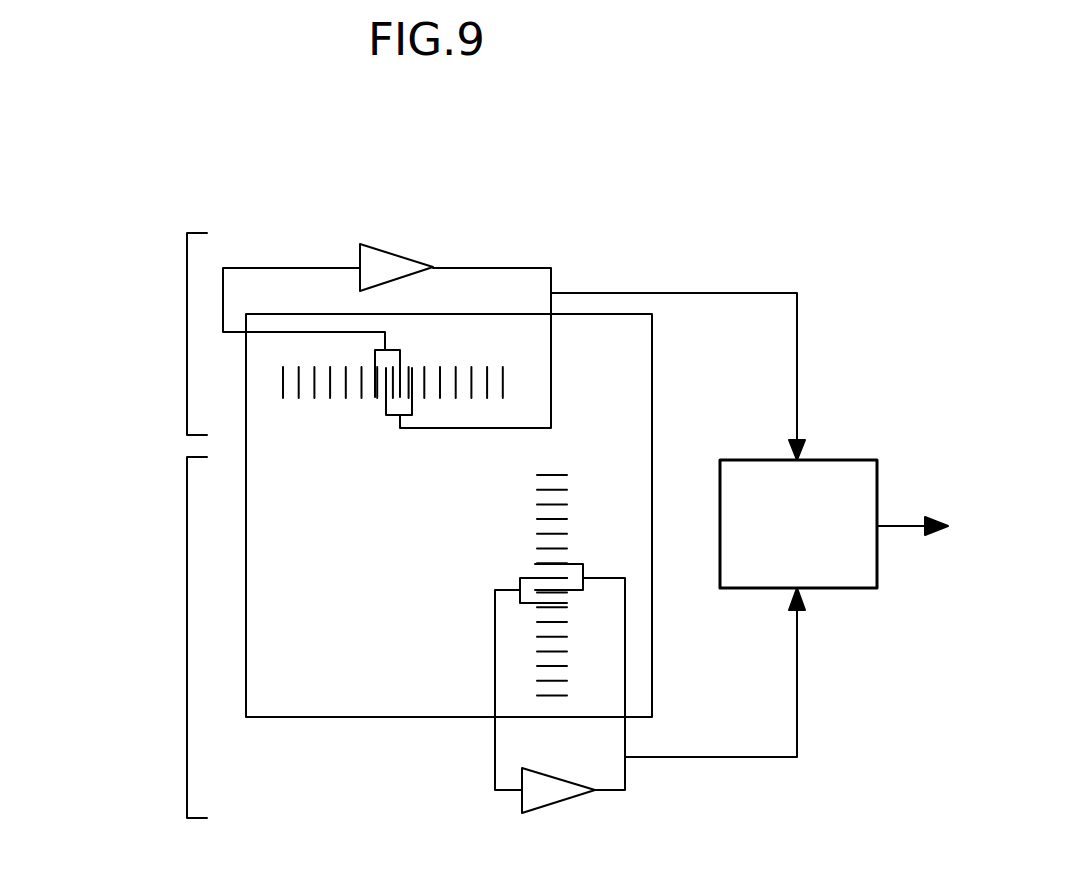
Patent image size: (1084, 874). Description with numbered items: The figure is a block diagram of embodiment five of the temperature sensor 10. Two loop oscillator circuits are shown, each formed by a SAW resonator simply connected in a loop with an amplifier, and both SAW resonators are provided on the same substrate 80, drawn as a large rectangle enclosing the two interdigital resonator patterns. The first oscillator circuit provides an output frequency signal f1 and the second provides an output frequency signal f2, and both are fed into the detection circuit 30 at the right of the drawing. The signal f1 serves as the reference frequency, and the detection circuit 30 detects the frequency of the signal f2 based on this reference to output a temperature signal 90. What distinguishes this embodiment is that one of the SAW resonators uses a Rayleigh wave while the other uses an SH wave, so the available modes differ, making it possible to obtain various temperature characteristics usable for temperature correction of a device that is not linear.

The temperature sensor 10 is at (902, 169).
The detection circuit 30 is at (833, 460).
The substrate 80 is at (655, 362).
The temperature signal 90 is at (900, 528).
The frequency signal f1 is at (770, 293).
The frequency signal f2 is at (775, 757).